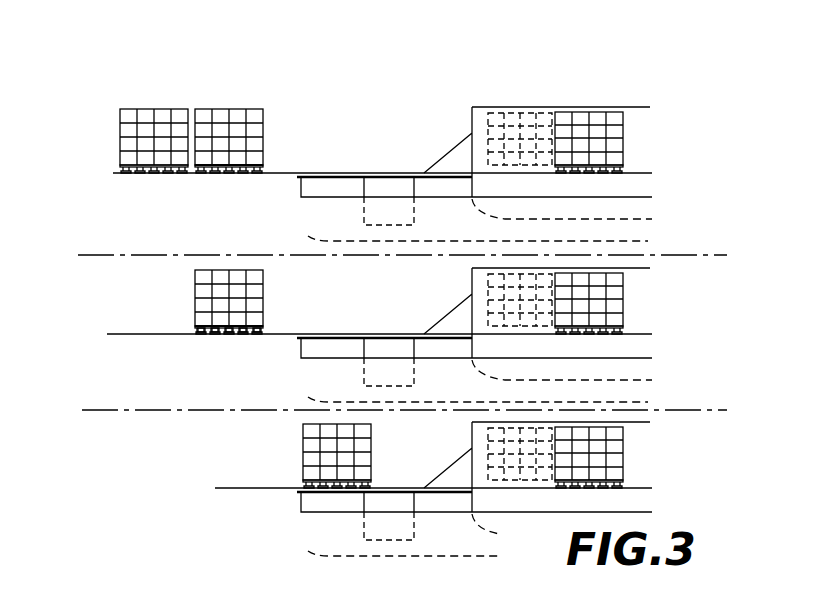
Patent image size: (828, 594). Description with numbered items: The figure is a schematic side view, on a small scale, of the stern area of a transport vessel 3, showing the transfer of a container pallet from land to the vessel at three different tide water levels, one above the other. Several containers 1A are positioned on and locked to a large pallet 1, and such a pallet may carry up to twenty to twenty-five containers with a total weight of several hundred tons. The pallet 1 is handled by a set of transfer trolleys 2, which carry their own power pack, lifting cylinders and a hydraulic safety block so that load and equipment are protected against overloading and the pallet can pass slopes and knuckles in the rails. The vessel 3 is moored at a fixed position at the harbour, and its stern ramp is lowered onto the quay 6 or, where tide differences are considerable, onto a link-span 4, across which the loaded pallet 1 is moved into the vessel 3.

The container 1A is at (228, 115).
The pallet 1 is at (262, 167).
The transfer trolley 2 is at (243, 336).
The vessel 3 is at (518, 107).
The link-span 4 is at (383, 185).
The quay 6 is at (270, 176).